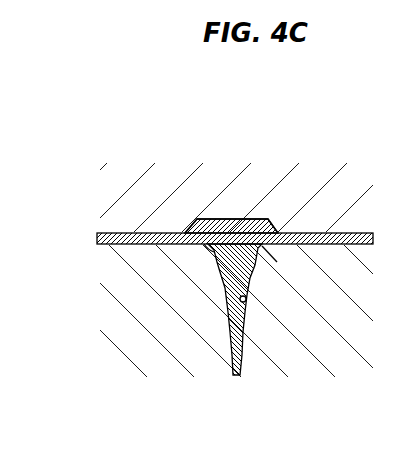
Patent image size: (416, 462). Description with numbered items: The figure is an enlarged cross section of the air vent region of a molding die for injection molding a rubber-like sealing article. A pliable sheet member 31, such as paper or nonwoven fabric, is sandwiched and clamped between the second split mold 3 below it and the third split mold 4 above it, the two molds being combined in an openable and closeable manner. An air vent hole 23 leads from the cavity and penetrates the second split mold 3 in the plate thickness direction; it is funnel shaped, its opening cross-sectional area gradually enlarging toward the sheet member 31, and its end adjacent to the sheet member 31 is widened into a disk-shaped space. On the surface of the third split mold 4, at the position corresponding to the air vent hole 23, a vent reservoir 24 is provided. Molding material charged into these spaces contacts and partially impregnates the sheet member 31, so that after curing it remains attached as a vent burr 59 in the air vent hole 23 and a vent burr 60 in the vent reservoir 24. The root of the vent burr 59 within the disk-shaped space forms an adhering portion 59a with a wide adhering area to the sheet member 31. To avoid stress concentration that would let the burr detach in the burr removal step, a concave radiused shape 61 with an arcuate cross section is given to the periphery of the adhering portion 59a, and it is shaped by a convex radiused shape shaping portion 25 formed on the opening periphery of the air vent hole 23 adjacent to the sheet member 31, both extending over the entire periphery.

The second split mold 3 is at (133, 327).
The third split mold 4 is at (123, 192).
The air vent hole 23 is at (250, 296).
The vent reservoir 24 is at (212, 219).
The radiused shape shaping portion 25 is at (277, 262).
The sheet member 31 is at (317, 231).
The vent burr 59 is at (224, 322).
The adhering portion 59a is at (257, 219).
The vent burr 60 is at (233, 218).
The radiused shape 61 is at (213, 250).